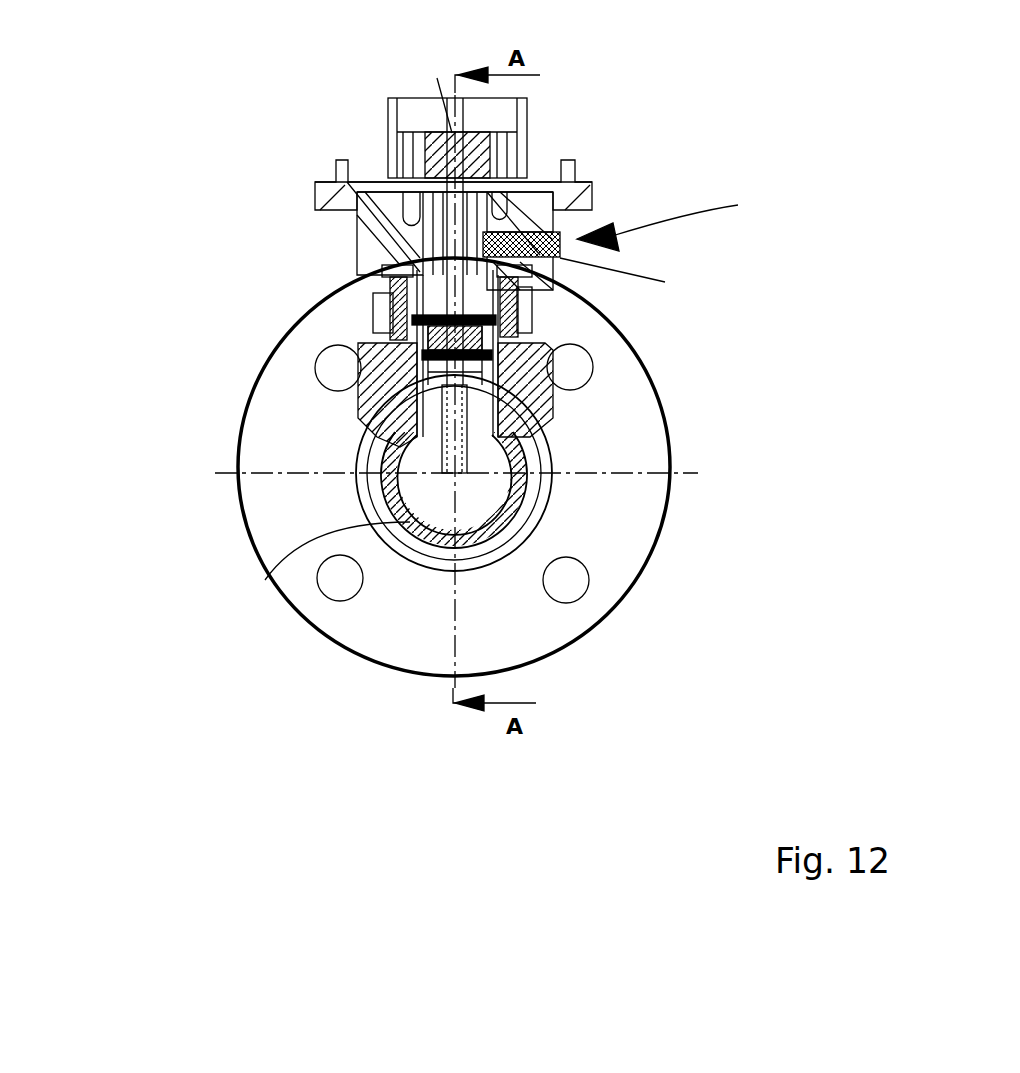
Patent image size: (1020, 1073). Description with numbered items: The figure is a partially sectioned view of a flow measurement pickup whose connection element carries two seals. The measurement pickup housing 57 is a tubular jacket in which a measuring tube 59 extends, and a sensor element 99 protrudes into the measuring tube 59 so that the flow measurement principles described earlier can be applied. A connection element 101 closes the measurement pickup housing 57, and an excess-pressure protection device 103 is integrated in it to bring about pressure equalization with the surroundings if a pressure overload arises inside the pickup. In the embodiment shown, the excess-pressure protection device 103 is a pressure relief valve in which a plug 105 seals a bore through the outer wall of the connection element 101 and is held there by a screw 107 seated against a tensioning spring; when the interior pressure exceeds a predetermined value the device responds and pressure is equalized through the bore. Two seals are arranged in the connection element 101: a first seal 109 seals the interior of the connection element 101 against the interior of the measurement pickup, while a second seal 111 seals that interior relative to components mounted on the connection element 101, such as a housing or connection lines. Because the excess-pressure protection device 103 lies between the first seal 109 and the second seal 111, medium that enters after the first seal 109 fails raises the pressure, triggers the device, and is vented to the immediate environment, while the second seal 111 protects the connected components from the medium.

The measurement pickup housing 57 is at (242, 433).
The measuring tube 59 is at (265, 580).
The sensor element 99 is at (550, 477).
The connection element 101 is at (355, 292).
The excess-pressure protection device 103 is at (701, 206).
The plug 105 is at (548, 232).
The screw 107 is at (548, 268).
The first seal 109 is at (493, 370).
The second seal 111 is at (363, 178).